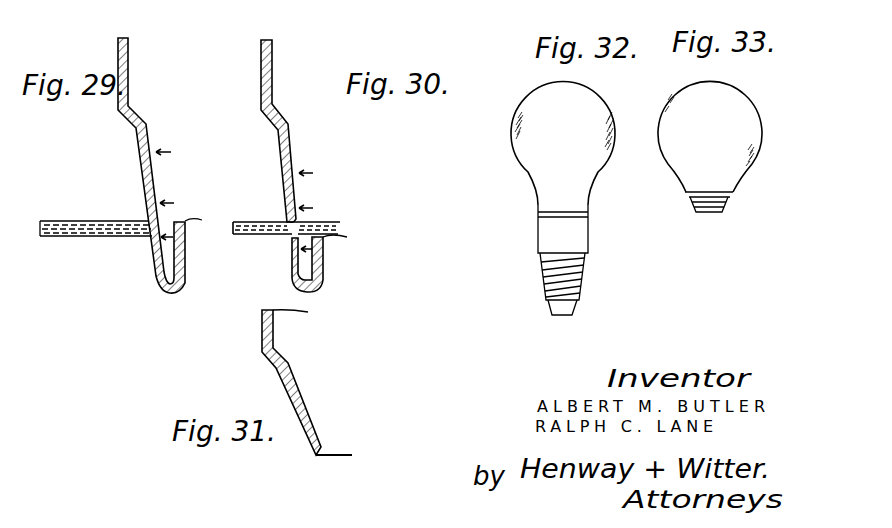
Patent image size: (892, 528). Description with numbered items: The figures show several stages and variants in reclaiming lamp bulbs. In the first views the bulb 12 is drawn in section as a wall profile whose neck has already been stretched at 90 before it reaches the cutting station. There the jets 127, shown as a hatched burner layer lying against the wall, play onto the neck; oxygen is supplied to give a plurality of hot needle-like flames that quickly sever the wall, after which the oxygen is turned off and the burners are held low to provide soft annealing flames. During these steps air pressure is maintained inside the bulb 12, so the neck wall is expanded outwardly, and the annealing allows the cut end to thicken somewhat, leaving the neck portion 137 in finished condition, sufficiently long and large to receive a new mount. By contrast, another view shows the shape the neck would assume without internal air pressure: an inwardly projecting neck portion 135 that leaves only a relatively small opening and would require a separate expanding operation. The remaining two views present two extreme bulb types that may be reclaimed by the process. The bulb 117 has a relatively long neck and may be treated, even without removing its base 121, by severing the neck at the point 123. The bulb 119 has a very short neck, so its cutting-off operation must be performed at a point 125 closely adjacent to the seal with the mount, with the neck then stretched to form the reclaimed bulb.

In FIG. 29, the bulb 12 is at (128, 38).
In FIG. 30, the bulb 12 is at (272, 40).
In FIG. 31, the bulb 12 is at (262, 313).
In FIG. 29, the stretched neck 90 is at (150, 203).
In FIG. 29, the jets 127 is at (76, 216).
In FIG. 30, the neck portion 137 is at (288, 193).
In FIG. 31, the inwardly projecting neck portion 135 is at (308, 424).
In FIG. 32, the bulb 117 is at (525, 135).
In FIG. 32, the neck severing point 123 is at (548, 217).
In FIG. 32, the base 121 is at (540, 287).
In FIG. 33, the bulb 119 is at (740, 113).
In FIG. 33, the cutting-off point 125 is at (718, 202).